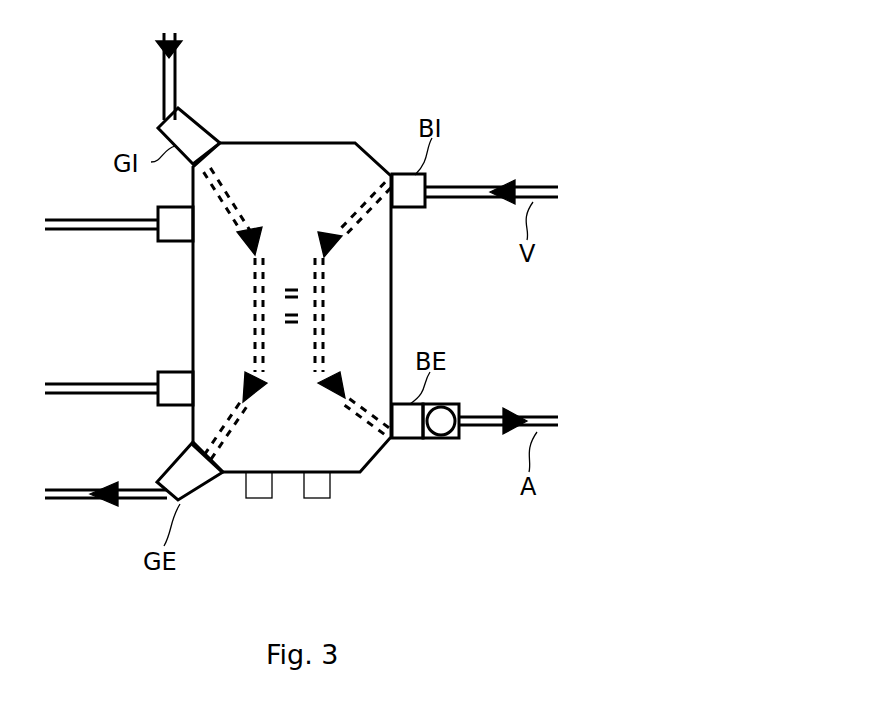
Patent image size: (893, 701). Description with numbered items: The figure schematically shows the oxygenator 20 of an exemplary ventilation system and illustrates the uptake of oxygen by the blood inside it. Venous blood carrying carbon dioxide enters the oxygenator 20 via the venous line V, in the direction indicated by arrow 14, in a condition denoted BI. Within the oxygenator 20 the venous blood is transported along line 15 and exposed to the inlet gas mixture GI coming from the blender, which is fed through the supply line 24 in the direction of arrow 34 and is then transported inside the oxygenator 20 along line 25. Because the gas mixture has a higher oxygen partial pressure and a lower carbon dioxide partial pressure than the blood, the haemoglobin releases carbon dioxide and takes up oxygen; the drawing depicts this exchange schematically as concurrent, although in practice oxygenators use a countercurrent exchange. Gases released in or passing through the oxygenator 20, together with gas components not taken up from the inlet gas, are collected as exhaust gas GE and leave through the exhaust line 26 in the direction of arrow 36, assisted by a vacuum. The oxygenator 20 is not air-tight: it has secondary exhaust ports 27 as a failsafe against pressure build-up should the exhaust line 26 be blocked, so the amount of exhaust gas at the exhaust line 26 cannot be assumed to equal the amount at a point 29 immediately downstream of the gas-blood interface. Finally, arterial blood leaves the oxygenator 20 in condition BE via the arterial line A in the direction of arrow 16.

The arrow indicating venous blood flow direction 14 is at (517, 185).
The blood transport line 15 is at (322, 290).
The arrow indicating arterial blood flow direction 16 is at (513, 412).
The oxygenator 20 is at (304, 197).
The supply line 24 is at (176, 90).
The gas transport line 25 is at (257, 292).
The exhaust line 26 is at (62, 488).
The secondary exhaust ports 27 is at (258, 500).
The point immediately downstream of the gas-blood interface 29 is at (240, 405).
The arrow indicating gas supply direction 34 is at (178, 52).
The arrow indicating exhaust gas direction 36 is at (117, 488).